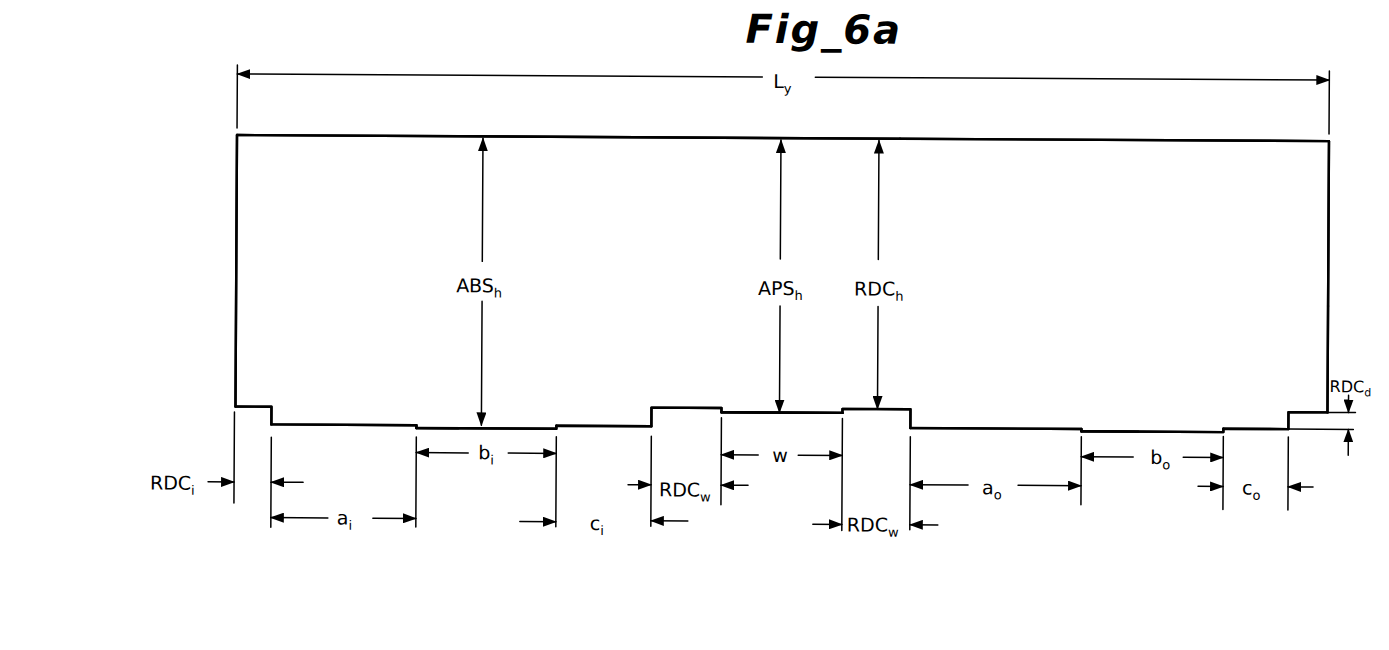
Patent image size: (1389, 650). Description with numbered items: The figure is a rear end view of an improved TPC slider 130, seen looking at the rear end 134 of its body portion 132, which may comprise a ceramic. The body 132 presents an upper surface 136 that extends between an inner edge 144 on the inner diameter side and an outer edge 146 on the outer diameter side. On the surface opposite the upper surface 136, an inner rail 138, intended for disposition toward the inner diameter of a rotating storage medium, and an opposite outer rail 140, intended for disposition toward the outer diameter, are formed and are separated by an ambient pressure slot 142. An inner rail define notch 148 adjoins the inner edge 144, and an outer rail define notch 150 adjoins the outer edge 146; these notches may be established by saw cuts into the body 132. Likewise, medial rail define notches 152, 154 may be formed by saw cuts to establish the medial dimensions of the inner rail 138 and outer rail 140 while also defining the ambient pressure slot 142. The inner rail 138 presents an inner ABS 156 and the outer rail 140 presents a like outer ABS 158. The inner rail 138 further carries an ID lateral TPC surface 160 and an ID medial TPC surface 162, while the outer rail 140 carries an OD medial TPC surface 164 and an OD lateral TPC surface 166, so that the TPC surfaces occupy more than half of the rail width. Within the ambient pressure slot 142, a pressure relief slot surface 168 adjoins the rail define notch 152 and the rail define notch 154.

The improved TPC slider 130 is at (1160, 527).
The body portion 132 is at (1162, 134).
The rear end 134 is at (1272, 335).
The upper surface 136 is at (587, 133).
The inner rail 138 is at (485, 473).
The outer rail 140 is at (1023, 494).
The ambient pressure slot 142 is at (791, 465).
The inner edge 144 is at (237, 312).
The outer edge 146 is at (1330, 206).
The inner rail define notch 148 is at (256, 412).
The outer rail define notch 150 is at (1308, 426).
The rail define notch 152 is at (700, 410).
The rail define notch 154 is at (892, 408).
The inner ABS 156 is at (453, 428).
The outer ABS 158 is at (1133, 430).
The ID lateral TPC surface 160 is at (333, 426).
The ID medial TPC surface 162 is at (585, 428).
The OD medial TPC surface 164 is at (1000, 425).
The OD lateral TPC surface 166 is at (1250, 421).
The pressure relief slot surface 168 is at (760, 412).